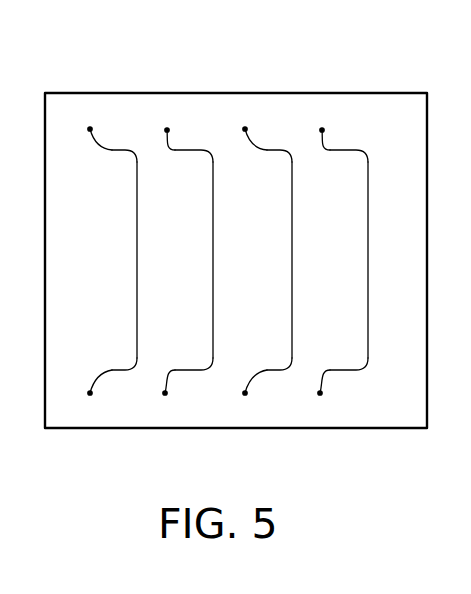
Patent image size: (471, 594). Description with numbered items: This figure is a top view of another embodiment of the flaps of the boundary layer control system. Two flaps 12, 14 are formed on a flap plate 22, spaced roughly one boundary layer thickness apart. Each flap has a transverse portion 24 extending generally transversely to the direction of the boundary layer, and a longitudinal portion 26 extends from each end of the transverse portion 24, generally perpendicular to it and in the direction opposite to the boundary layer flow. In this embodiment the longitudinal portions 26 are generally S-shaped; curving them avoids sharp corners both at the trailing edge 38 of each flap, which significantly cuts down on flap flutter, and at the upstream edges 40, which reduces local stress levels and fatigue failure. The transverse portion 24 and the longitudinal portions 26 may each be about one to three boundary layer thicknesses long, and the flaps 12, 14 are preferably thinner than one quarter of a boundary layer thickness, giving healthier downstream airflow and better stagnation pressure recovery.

The flap 12 is at (215, 268).
The flap 14 is at (219, 108).
The flap plate 22 is at (357, 93).
The transverse portion 24 is at (213, 280).
The longitudinal portion 26 is at (190, 146).
The trailing edge 38 is at (203, 157).
The upstream edge 40 is at (93, 145).